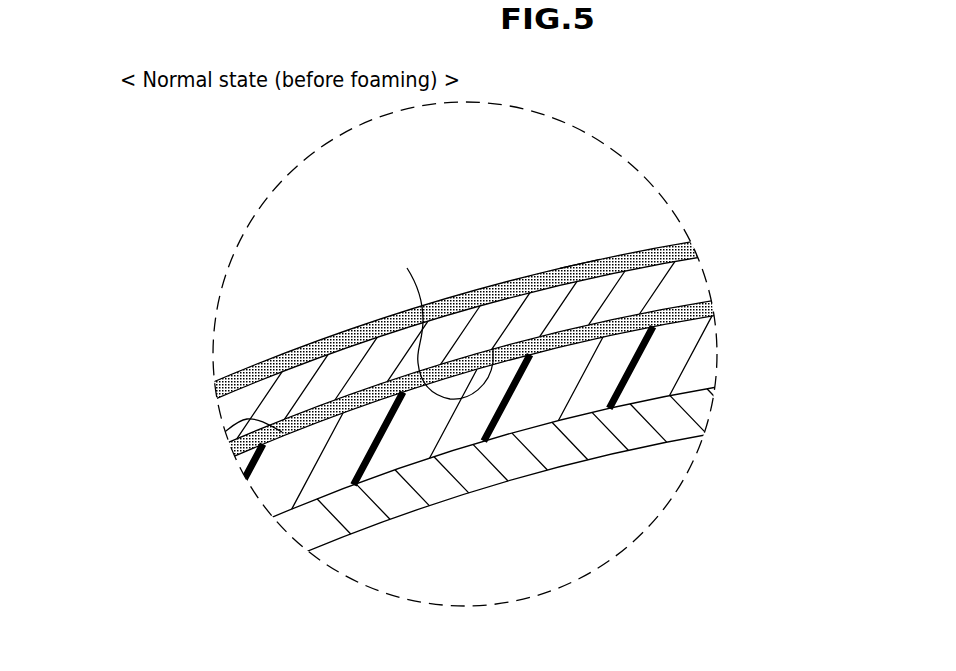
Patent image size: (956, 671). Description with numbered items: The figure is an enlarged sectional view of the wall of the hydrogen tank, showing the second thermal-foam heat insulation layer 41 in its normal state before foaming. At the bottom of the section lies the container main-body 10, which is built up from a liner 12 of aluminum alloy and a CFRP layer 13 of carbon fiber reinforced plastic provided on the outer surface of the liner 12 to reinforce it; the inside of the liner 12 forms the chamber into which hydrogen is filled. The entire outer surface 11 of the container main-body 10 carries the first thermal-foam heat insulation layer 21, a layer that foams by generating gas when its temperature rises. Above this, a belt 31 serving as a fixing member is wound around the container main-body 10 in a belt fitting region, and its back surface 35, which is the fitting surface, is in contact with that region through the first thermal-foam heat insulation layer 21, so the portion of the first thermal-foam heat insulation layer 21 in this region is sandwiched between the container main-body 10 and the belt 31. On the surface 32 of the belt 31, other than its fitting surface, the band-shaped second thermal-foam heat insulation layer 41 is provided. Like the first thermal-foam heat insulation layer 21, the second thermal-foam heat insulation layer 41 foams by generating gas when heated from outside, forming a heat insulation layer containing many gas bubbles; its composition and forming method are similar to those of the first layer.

The container main-body 10 is at (431, 455).
The outer surface 11 is at (222, 434).
The liner 12 is at (313, 525).
The CFRP layer 13 is at (292, 482).
The first thermal-foam heat insulation layer 21 is at (700, 307).
The belt 31 is at (678, 275).
The surface 32 is at (582, 263).
The back surface 35 is at (439, 320).
The second thermal-foam heat insulation layer 41 is at (697, 242).